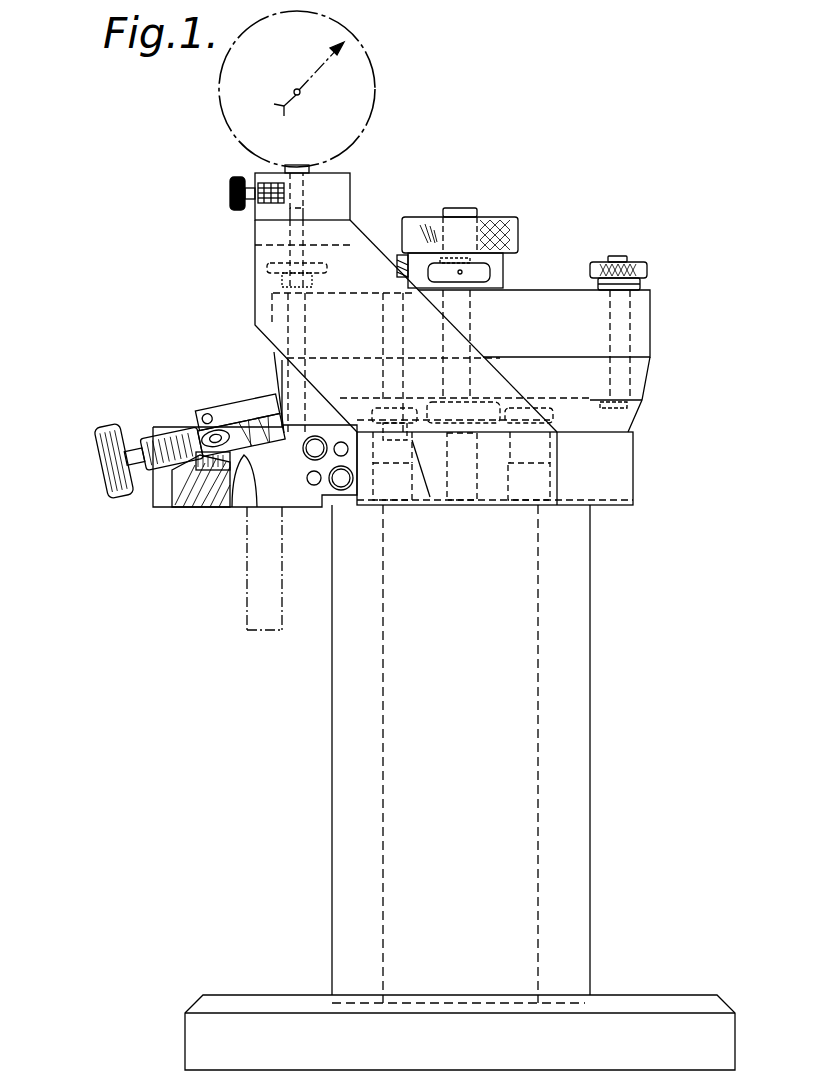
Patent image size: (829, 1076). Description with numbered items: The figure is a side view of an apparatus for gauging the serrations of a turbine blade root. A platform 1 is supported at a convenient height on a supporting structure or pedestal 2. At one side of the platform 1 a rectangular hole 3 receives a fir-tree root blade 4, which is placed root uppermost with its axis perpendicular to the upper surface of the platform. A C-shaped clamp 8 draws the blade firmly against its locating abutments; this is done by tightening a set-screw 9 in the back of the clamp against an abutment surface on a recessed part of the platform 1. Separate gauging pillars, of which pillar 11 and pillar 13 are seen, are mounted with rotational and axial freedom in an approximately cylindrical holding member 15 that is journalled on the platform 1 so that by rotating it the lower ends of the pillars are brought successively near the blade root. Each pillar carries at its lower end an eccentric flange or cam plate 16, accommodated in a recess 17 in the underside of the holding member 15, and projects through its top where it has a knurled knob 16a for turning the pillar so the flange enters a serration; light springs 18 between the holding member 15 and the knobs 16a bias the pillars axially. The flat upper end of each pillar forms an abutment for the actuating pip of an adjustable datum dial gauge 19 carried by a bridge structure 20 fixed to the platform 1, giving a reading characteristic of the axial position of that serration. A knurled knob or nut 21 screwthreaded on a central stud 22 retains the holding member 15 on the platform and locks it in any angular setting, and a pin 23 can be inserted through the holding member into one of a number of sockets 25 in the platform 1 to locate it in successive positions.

The platform 1 is at (620, 477).
The supporting structure or pedestal 2 is at (570, 628).
The rectangular hole 3 is at (298, 500).
The fir-tree root blade 4 is at (255, 568).
The C-shaped clamp 8 is at (152, 437).
The set-screw 9 is at (118, 496).
The gauging pillar 11 is at (275, 323).
The gauging pillar 13 is at (622, 325).
The holding member 15 is at (640, 378).
The eccentric flange or cam plate 16 is at (630, 422).
The knurled knob 16a is at (648, 270).
The recess 17 is at (622, 443).
The light spring 18 is at (640, 283).
The adjustable datum dial gauge 19 is at (222, 104).
The bridge structure 20 is at (262, 232).
The knurled knob or nut 21 is at (518, 231).
The central stud 22 is at (482, 322).
The pin 23 is at (392, 255).
The socket 25 is at (422, 488).